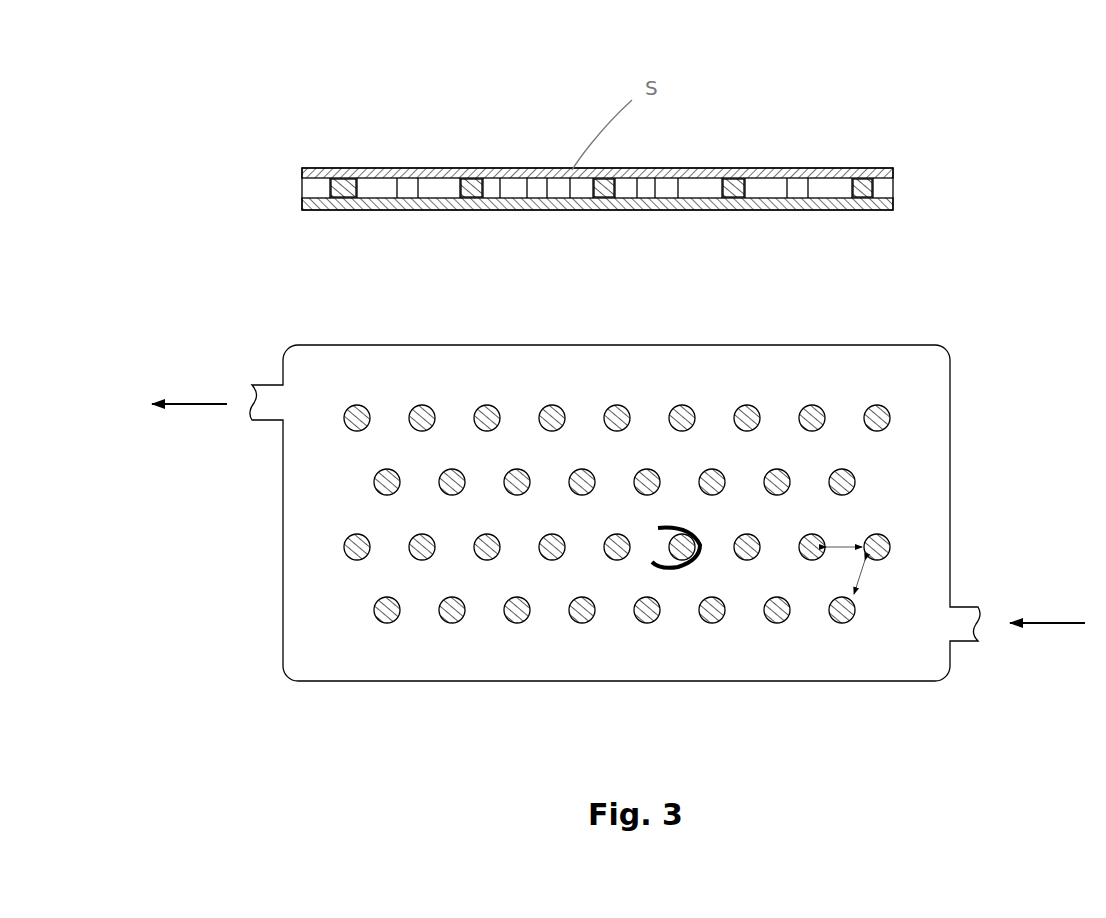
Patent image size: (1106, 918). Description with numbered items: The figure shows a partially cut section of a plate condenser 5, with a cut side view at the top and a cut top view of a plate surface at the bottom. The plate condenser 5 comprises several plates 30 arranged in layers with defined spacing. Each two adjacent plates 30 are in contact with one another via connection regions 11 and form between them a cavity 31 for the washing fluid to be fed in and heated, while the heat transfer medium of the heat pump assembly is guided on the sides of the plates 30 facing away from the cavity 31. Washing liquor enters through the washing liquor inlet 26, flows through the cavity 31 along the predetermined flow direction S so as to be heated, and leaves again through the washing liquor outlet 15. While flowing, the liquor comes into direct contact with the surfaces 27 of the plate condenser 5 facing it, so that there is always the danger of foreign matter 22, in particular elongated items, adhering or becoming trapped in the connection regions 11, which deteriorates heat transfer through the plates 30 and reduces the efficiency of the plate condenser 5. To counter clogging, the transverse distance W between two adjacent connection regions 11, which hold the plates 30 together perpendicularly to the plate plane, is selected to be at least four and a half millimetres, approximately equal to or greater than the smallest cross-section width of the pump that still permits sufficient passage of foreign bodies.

The plate condenser 5 is at (957, 190).
The connection regions 11 is at (735, 198).
The washing liquor outlet 15 is at (263, 385).
The foreign matter 22 is at (675, 567).
The washing liquor inlet 26 is at (965, 645).
The surfaces 27 is at (502, 170).
The plates 30 is at (303, 172).
The cavity 31 is at (300, 183).
The flow direction S is at (190, 410).
The transverse distance W is at (845, 540).